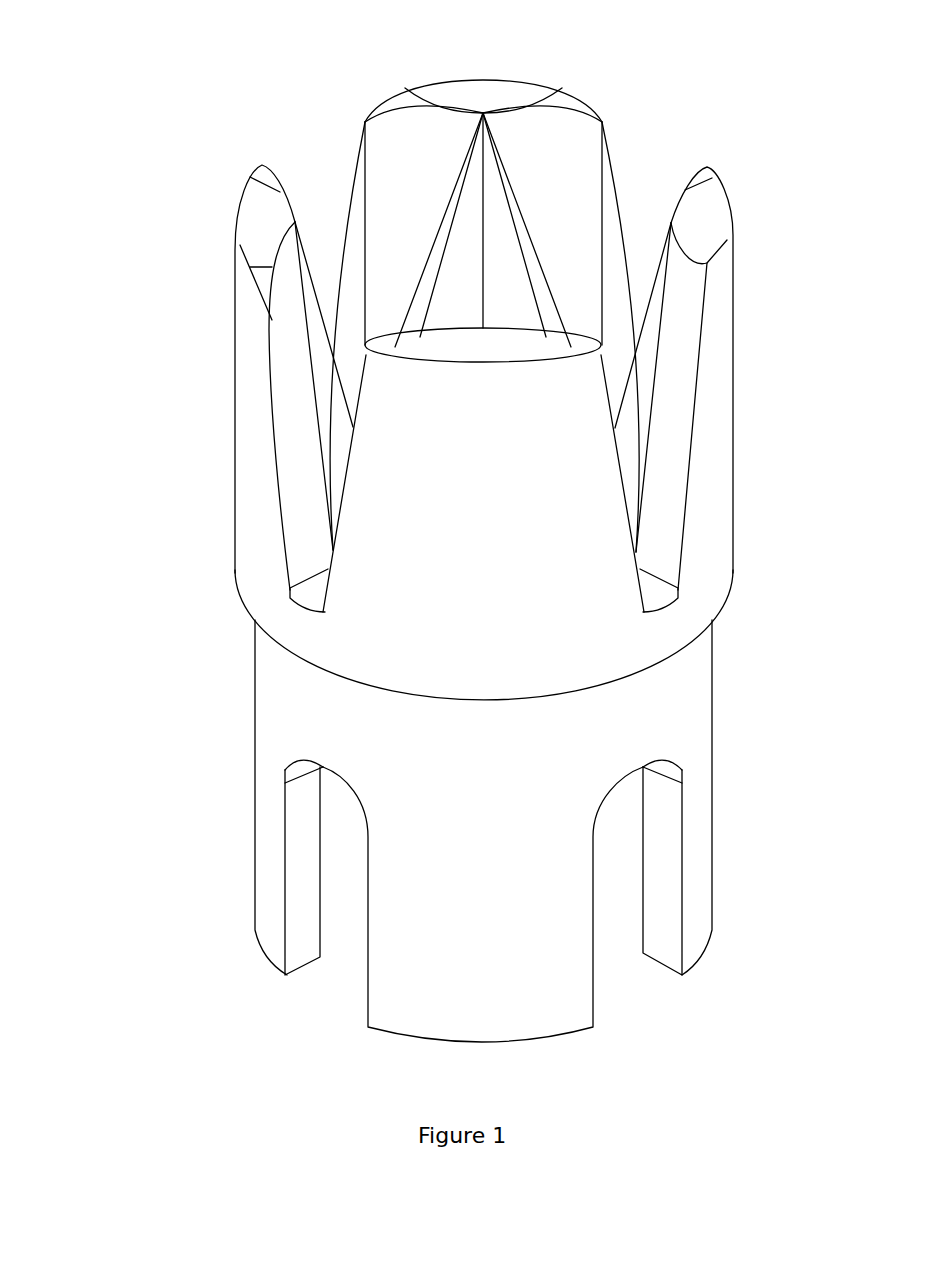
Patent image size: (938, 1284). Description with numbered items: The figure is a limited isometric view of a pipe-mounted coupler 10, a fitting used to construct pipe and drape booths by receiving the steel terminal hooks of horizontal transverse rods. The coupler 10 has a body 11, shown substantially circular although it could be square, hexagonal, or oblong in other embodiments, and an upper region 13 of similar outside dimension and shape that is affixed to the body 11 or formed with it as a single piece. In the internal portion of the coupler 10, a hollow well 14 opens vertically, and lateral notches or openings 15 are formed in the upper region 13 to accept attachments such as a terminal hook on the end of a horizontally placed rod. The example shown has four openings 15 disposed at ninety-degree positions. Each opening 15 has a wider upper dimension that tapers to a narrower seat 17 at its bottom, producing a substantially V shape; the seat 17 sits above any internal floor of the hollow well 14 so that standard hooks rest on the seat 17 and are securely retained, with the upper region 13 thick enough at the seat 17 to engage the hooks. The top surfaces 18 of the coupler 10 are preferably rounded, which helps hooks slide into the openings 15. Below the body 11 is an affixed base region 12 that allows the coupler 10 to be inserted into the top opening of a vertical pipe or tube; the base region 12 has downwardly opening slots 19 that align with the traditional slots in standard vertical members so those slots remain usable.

The pipe-mounted coupler 10 is at (41, 44).
The body 11 is at (484, 527).
The base region 12 is at (308, 733).
The upper region 13 is at (715, 437).
The hollow well 14 is at (465, 248).
The opening 15 is at (295, 463).
The seat 17 is at (318, 590).
The top surfaces 18 is at (700, 220).
The slots 19 is at (662, 891).